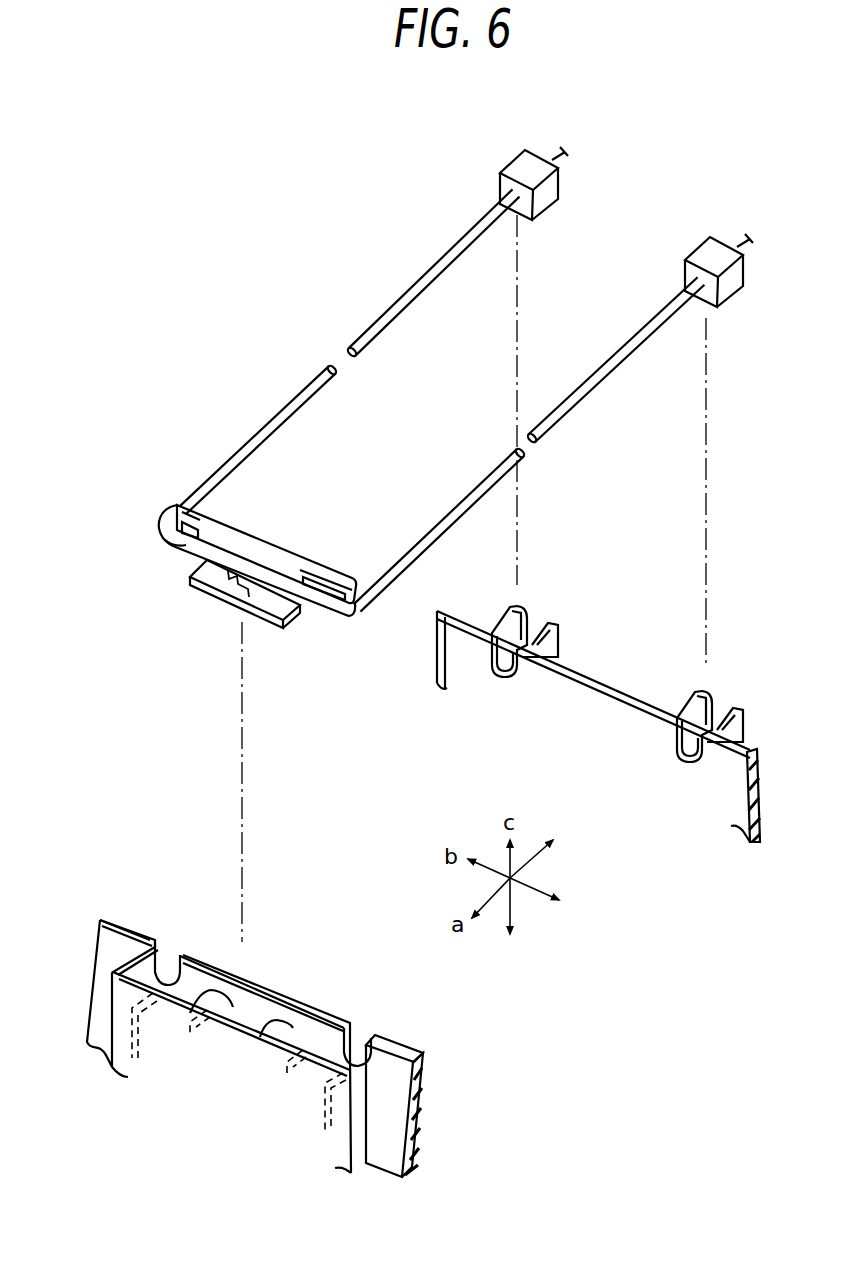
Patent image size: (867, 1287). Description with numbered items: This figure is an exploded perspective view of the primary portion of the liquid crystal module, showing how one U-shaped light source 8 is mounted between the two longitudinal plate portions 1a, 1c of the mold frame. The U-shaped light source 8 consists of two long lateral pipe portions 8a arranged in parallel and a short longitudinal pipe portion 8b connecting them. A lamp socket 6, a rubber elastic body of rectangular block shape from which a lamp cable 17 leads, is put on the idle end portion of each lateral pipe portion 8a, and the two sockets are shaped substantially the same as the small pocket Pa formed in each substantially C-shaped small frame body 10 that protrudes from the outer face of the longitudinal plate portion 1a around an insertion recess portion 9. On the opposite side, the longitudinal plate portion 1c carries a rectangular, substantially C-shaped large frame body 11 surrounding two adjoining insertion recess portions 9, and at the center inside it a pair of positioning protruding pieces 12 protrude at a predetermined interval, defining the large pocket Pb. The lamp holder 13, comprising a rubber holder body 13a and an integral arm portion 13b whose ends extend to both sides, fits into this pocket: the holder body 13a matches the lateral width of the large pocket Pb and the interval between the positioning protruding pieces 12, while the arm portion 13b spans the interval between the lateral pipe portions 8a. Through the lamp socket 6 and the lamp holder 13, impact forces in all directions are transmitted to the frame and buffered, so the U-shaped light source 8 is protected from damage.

The U-shaped light source 8 is at (376, 313).
The lateral pipe portion 8a is at (430, 562).
The longitudinal pipe portion 8b is at (187, 543).
The lamp cable 17 is at (747, 238).
The lamp socket 6 is at (687, 270).
The longitudinal plate portion 1a is at (589, 682).
The longitudinal plate portion 1c is at (123, 928).
The insertion recess portion 9 is at (498, 673).
The small frame body 10 is at (493, 627).
The small pocket Pa is at (519, 636).
The large pocket Pb is at (258, 1014).
The lamp holder 13 is at (292, 638).
The holder body 13a is at (266, 628).
The arm portion 13b is at (193, 512).
The positioning protruding piece 12 is at (278, 1040).
The large frame body 11 is at (363, 1110).